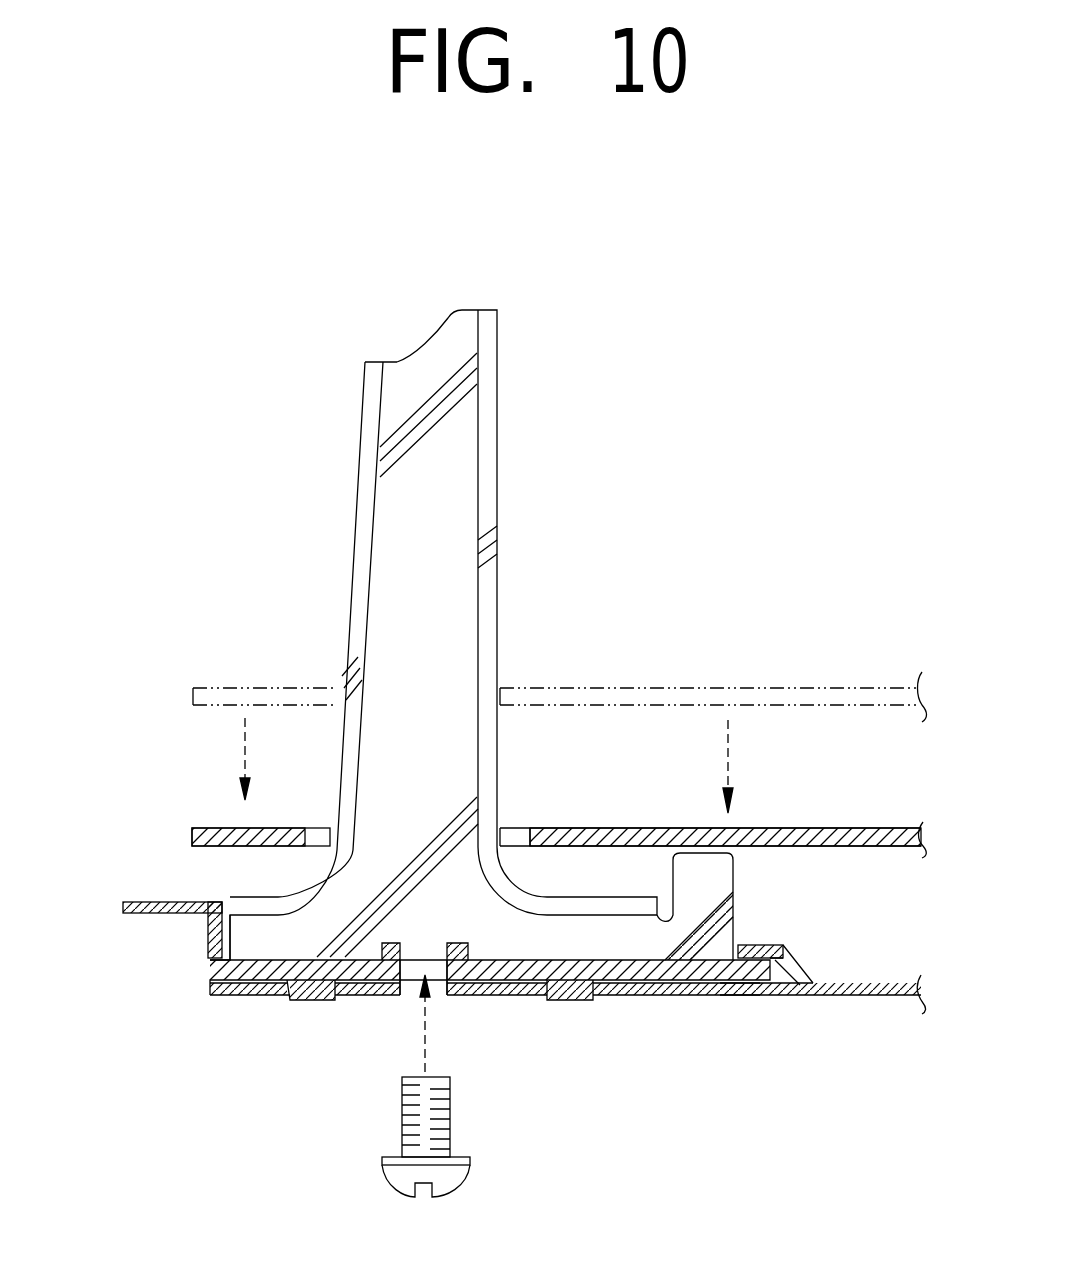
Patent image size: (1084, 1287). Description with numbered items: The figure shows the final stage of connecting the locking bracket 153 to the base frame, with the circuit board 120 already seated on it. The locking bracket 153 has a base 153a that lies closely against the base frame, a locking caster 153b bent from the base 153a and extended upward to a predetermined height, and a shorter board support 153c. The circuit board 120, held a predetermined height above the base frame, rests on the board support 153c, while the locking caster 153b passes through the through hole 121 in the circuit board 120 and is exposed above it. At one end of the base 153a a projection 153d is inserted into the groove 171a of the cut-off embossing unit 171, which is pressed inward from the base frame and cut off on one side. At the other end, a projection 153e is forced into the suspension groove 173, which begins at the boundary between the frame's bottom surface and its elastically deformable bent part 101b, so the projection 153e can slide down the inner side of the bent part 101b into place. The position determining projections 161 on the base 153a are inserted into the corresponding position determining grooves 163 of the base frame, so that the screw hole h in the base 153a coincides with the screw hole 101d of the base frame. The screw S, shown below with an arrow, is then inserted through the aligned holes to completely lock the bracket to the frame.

The bent part 101b is at (207, 932).
The screw hole 101d is at (447, 980).
The circuit board 120 is at (851, 838).
The through hole 121 is at (523, 838).
The locking bracket 153 is at (516, 532).
The base 153a is at (673, 992).
The locking caster 153b is at (400, 513).
The board support 153c is at (720, 856).
The projection 153d is at (758, 997).
The projection 153e is at (210, 963).
The position determining projections 161 is at (580, 1000).
The position determining grooves 163 is at (562, 1002).
The cut-off embossing unit 171 is at (790, 948).
The groove 171a is at (795, 997).
The suspension groove 173 is at (205, 963).
The screw hole h is at (410, 962).
The screw S is at (398, 1182).